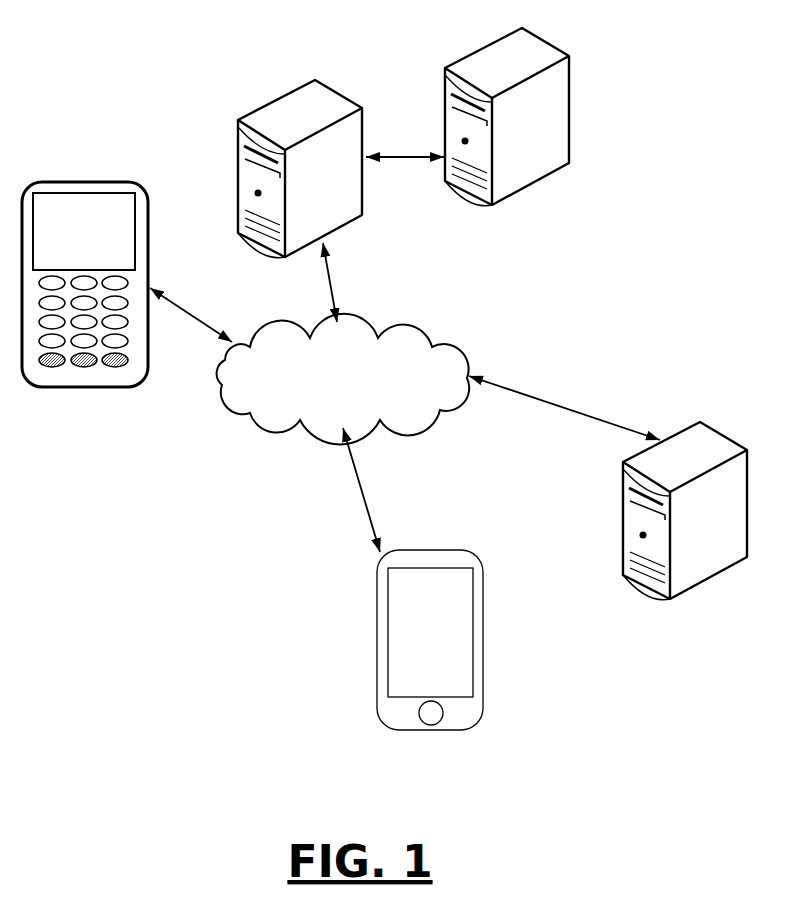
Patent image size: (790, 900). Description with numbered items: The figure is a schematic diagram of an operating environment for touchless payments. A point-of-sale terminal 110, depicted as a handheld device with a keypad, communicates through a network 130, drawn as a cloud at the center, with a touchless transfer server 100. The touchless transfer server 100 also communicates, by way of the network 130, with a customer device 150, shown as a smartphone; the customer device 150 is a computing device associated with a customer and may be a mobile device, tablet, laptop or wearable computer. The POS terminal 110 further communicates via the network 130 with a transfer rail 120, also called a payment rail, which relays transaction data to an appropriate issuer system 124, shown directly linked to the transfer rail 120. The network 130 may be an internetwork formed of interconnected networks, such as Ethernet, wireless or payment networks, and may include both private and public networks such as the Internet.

The touchless transfer server 100 is at (712, 438).
The POS terminal 110 is at (78, 181).
The transfer rail 120 is at (331, 95).
The issuer system 124 is at (567, 52).
The network 130 is at (343, 379).
The customer device 150 is at (408, 549).